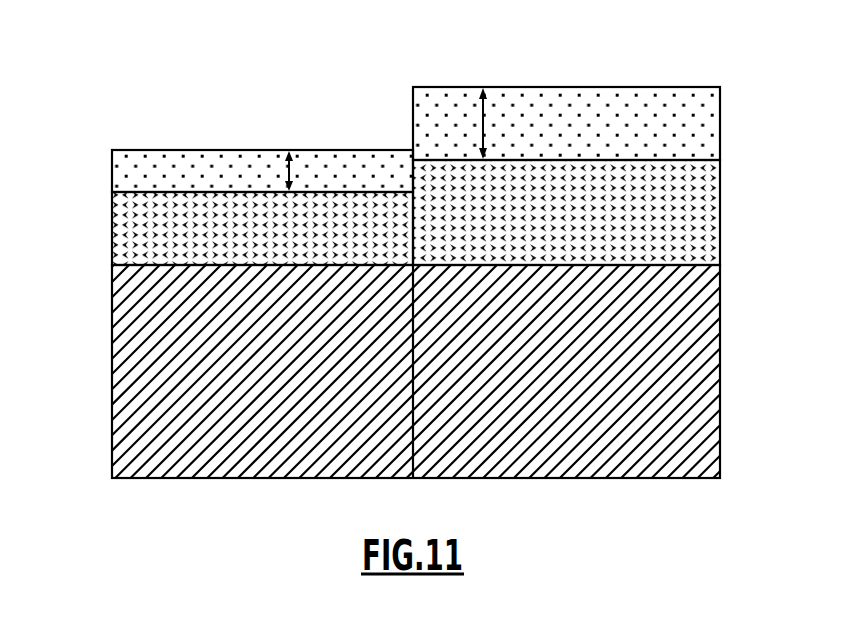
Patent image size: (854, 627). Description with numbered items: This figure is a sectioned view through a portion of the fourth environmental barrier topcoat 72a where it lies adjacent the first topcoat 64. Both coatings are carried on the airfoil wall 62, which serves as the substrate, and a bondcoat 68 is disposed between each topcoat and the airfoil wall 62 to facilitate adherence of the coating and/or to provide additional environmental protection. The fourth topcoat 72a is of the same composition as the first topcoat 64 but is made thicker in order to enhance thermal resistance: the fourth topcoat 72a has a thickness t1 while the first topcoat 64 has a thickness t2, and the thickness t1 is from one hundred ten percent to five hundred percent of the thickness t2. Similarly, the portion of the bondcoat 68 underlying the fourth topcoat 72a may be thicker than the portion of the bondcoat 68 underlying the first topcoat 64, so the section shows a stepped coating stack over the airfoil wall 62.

The airfoil wall 62 is at (111, 358).
The first topcoat 64 is at (111, 172).
The bondcoat 68 is at (111, 224).
The fourth topcoat 72a is at (721, 122).
The thickness of the fourth topcoat t1 is at (483, 110).
The thickness of the first topcoat t2 is at (289, 171).